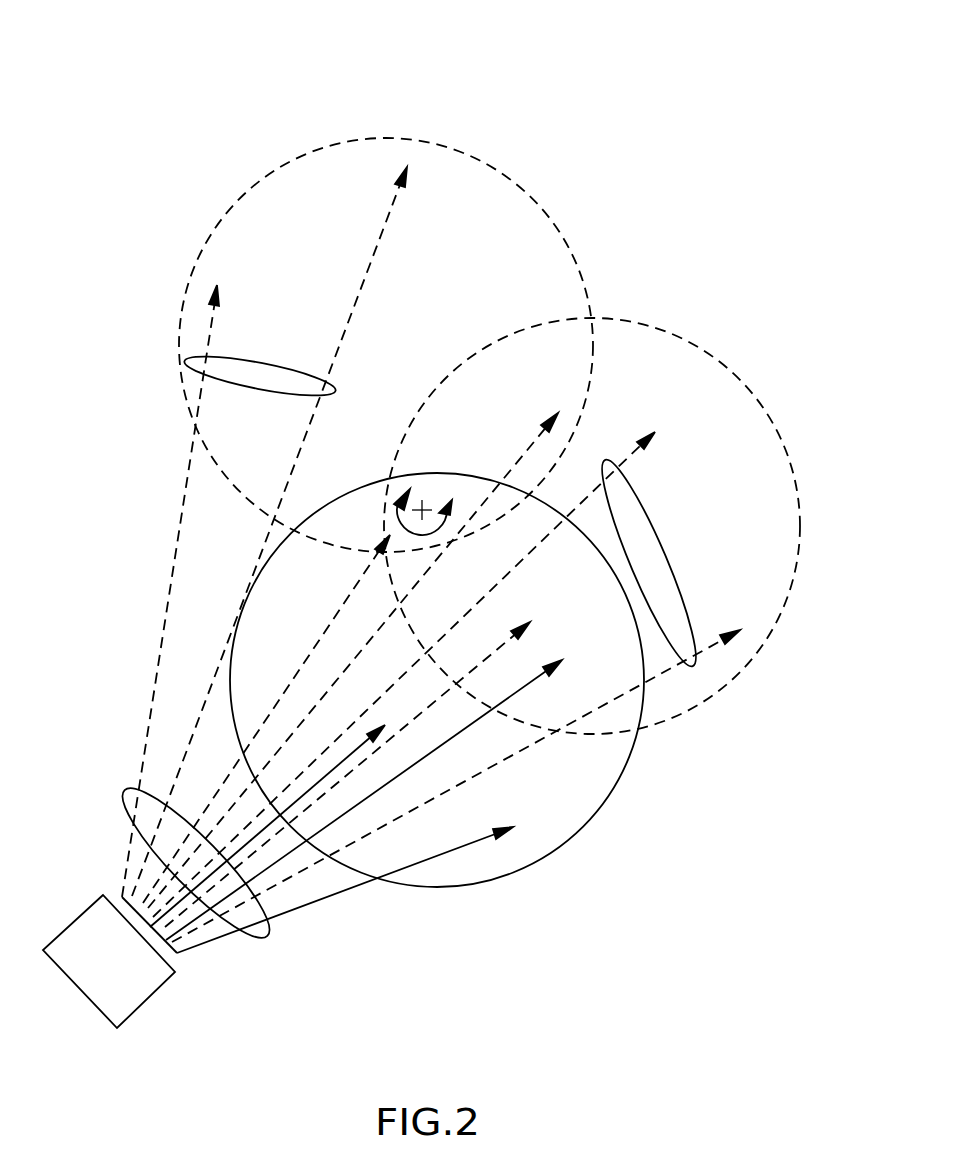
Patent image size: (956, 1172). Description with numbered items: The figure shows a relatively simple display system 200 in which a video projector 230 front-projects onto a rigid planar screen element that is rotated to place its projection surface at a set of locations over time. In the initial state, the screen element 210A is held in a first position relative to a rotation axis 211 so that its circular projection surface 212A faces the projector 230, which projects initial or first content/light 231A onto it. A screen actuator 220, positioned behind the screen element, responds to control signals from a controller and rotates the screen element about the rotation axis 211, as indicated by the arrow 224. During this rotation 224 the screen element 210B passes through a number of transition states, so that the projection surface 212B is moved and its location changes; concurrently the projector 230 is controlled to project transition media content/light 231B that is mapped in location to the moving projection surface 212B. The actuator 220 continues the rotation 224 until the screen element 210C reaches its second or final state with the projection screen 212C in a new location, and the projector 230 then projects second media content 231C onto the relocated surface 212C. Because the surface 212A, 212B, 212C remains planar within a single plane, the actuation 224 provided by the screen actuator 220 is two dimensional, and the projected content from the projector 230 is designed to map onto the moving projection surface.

The display system 200 is at (145, 70).
The screen element 210A is at (366, 680).
The screen element 210B is at (604, 514).
The screen element 210C is at (327, 345).
The rotation axis 211 is at (431, 505).
The projection surface 212A is at (260, 645).
The projection surface 212B is at (738, 647).
The projection screen 212C is at (515, 220).
The screen actuator 220 is at (431, 560).
The rotation 224 is at (396, 512).
The video projector 230 is at (157, 988).
The first content/light 231A is at (267, 938).
The transition media content/light 231B is at (693, 667).
The second media content 231C is at (185, 364).